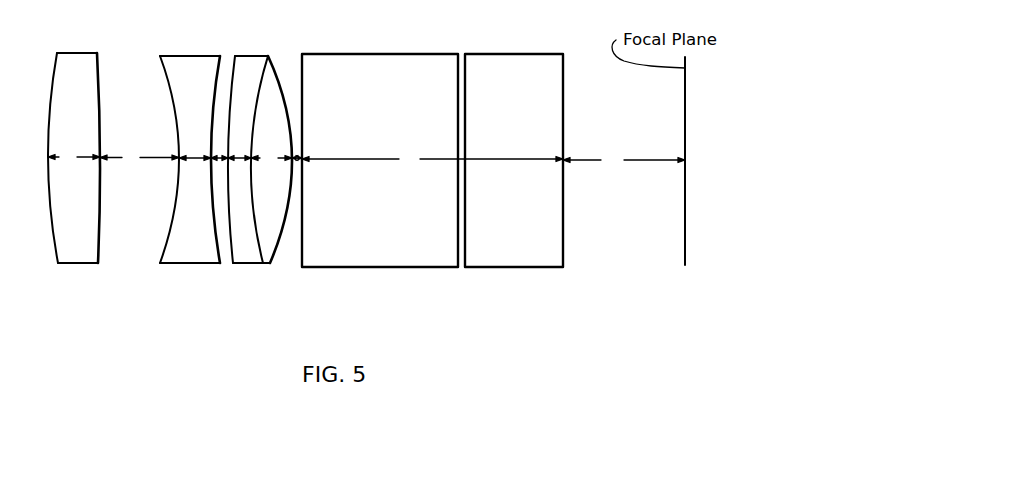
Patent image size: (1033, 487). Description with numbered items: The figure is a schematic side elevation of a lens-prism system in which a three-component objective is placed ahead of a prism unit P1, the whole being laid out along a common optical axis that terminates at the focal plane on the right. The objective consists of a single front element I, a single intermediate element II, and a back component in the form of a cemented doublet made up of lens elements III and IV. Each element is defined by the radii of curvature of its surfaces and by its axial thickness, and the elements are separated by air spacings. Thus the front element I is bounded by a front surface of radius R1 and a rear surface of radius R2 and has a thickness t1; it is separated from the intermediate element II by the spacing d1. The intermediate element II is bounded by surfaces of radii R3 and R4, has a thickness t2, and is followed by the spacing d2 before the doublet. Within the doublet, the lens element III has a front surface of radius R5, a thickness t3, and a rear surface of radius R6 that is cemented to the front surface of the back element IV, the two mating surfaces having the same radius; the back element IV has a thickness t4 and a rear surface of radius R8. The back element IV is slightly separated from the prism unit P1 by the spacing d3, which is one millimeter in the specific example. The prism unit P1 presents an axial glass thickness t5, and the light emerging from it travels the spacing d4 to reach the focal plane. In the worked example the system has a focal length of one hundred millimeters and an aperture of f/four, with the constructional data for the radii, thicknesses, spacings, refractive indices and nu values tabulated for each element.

The front element I is at (83, 57).
The intermediate element II is at (172, 57).
The lens element III is at (248, 58).
The back element IV is at (272, 68).
The prism unit P1 is at (418, 60).
The radius of curvature of front surface of element I R1 is at (53, 252).
The radius of curvature of rear surface of element I R2 is at (97, 253).
The radius of curvature of front surface of element II R3 is at (167, 235).
The radius of curvature of rear surface of element II R4 is at (220, 252).
The radius of curvature of front surface of element III R5 is at (230, 257).
The radius of curvature of rear surface of element III R6 is at (258, 250).
The radius of curvature of rear surface of element IV R8 is at (278, 250).
The thickness of element I t1 is at (74, 161).
The thickness of element II t2 is at (195, 163).
The thickness of element III t3 is at (235, 165).
The thickness of element IV t4 is at (271, 163).
The thickness of prism unit t5 is at (432, 163).
The spacing between elements I and II d1 is at (139, 161).
The spacing between elements II and III d2 is at (215, 157).
The spacing between element IV and prism unit d3 is at (296, 157).
The spacing between prism unit and focal plane d4 is at (624, 164).